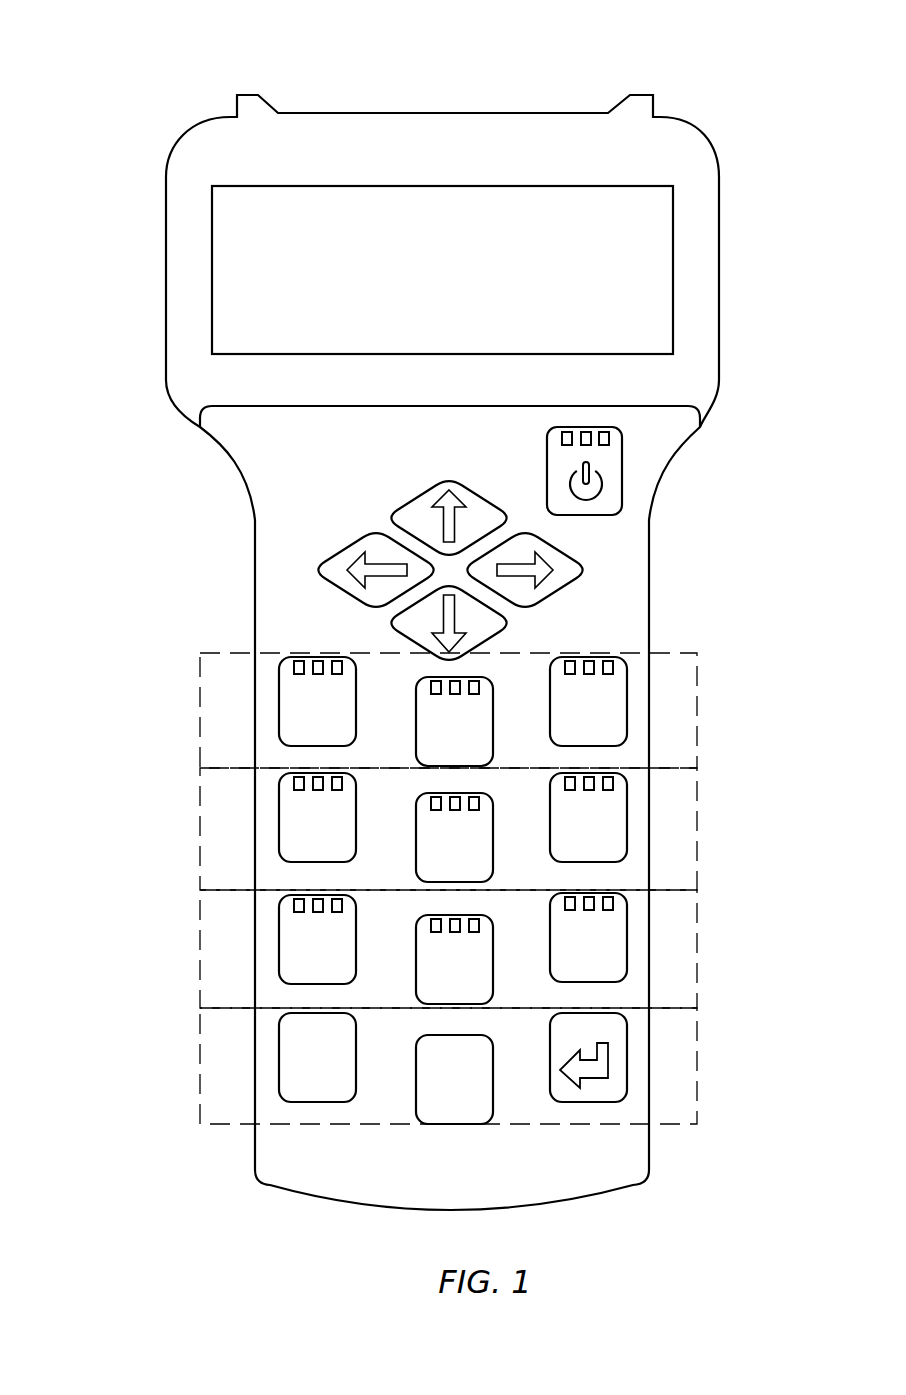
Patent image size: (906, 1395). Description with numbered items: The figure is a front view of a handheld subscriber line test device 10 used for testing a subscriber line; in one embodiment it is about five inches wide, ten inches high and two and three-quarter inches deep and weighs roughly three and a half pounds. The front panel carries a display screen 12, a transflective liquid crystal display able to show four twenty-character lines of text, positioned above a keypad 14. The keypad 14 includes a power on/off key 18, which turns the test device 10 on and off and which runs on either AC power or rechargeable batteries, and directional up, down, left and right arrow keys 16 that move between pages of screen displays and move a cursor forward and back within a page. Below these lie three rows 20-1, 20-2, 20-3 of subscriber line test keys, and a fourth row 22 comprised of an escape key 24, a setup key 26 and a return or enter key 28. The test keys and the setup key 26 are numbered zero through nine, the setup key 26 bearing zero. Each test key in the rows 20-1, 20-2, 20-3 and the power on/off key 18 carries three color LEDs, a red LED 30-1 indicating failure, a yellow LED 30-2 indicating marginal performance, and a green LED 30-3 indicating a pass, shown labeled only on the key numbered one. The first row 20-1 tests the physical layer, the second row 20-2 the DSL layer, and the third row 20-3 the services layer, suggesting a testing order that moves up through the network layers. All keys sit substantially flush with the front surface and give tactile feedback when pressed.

The handheld subscriber line test device 10 is at (88, 74).
The display screen 12 is at (470, 287).
The keypad 14 is at (250, 460).
The directional arrow keys 16 is at (378, 521).
The power on/off key 18 is at (605, 503).
The first row of subscriber line test keys 20-1 is at (484, 675).
The second row of subscriber line test keys 20-2 is at (697, 828).
The third row of subscriber line test keys 20-3 is at (697, 955).
The fourth row 22 is at (481, 1092).
The escape (ESC) key 24 is at (322, 1092).
The setup key 26 is at (453, 1117).
The return (or enter) key 28 is at (588, 1092).
The red LED 30-1 is at (293, 662).
The yellow LED 30-2 is at (312, 658).
The green LED 30-3 is at (337, 660).